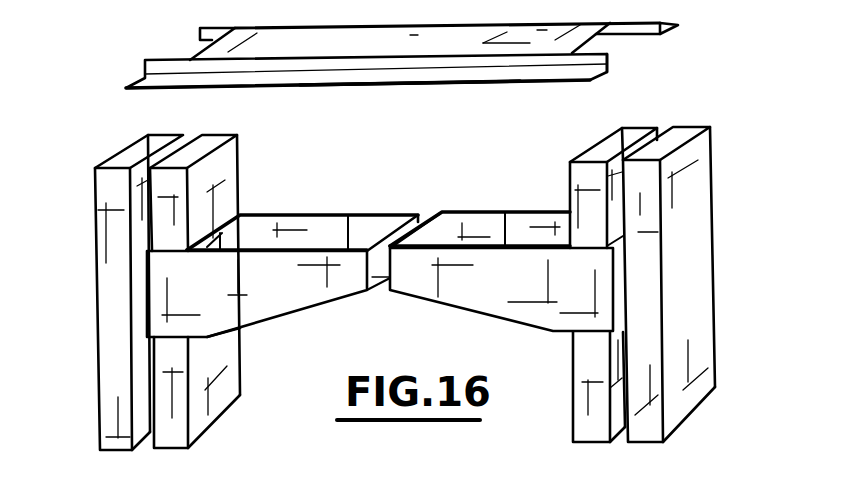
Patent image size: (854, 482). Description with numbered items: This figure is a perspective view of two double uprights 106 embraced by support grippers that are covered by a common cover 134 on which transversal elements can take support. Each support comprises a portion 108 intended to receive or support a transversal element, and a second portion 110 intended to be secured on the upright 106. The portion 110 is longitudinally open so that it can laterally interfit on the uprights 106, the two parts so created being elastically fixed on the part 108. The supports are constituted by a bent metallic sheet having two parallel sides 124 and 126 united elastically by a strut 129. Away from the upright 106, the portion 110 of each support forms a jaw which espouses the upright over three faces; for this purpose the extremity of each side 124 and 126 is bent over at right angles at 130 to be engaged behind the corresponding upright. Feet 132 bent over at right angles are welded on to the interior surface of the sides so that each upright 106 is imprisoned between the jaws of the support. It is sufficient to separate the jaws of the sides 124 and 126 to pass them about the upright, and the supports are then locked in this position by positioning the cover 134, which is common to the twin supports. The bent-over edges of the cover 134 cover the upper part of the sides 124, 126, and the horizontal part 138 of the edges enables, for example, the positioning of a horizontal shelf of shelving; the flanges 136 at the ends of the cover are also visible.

The upright 106 is at (238, 155).
The support portion 108 is at (297, 313).
The securing portion 110 is at (157, 286).
The first side 124 is at (341, 291).
The second side 126 is at (390, 214).
The strut 129 is at (376, 278).
The bent-over extremity 130 is at (620, 302).
The feet 132 is at (240, 238).
The cover 134 is at (343, 60).
The flange 136 is at (660, 34).
The horizontal part 138 is at (475, 80).